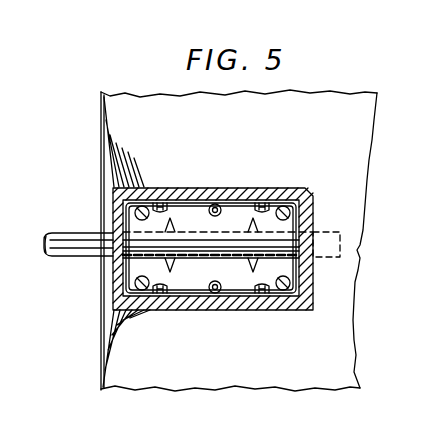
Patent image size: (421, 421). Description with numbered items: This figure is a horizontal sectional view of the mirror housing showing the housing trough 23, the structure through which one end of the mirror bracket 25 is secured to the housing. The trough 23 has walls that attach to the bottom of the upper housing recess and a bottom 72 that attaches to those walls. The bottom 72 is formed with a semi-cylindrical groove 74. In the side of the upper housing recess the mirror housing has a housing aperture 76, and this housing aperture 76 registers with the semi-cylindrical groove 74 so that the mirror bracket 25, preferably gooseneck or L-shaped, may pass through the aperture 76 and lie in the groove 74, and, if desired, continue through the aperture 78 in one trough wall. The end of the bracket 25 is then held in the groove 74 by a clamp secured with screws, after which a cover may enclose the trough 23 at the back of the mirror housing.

The housing trough 23 is at (270, 188).
The mirror bracket 25 is at (43, 253).
The bottom 72 is at (221, 214).
The semi-cylindrical groove 74 is at (315, 187).
The housing aperture 76 is at (103, 257).
The aperture 78 is at (313, 257).